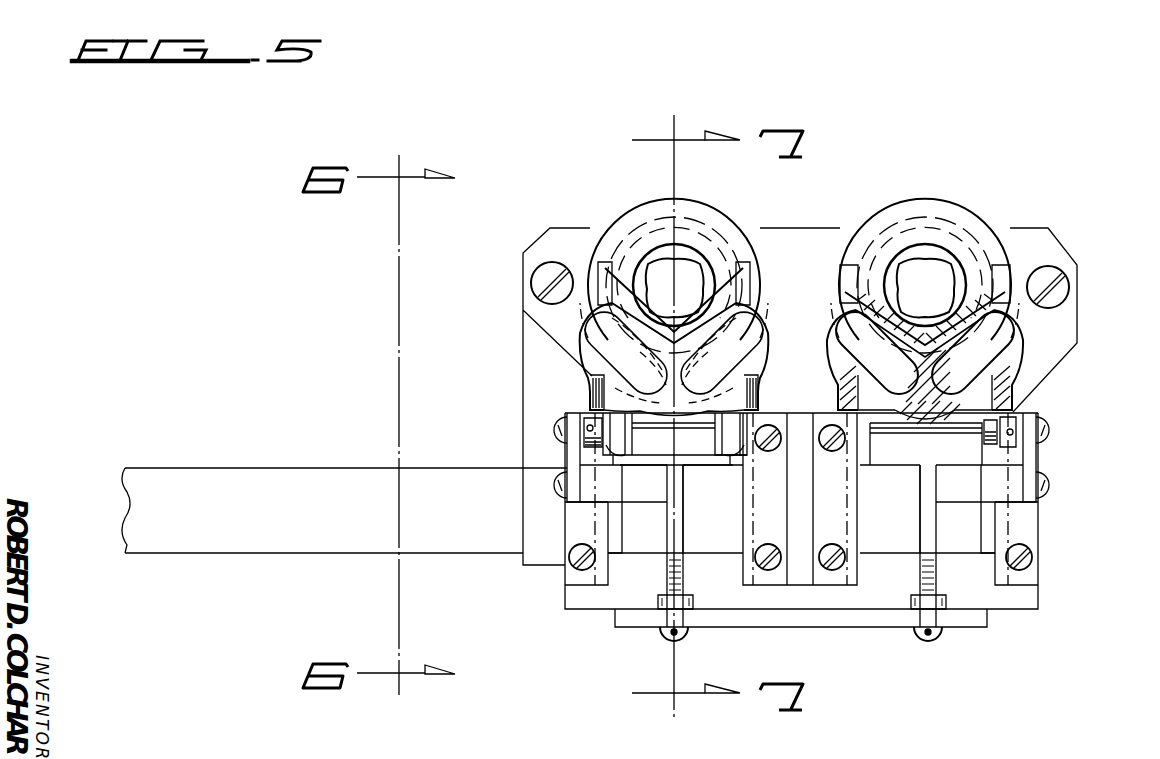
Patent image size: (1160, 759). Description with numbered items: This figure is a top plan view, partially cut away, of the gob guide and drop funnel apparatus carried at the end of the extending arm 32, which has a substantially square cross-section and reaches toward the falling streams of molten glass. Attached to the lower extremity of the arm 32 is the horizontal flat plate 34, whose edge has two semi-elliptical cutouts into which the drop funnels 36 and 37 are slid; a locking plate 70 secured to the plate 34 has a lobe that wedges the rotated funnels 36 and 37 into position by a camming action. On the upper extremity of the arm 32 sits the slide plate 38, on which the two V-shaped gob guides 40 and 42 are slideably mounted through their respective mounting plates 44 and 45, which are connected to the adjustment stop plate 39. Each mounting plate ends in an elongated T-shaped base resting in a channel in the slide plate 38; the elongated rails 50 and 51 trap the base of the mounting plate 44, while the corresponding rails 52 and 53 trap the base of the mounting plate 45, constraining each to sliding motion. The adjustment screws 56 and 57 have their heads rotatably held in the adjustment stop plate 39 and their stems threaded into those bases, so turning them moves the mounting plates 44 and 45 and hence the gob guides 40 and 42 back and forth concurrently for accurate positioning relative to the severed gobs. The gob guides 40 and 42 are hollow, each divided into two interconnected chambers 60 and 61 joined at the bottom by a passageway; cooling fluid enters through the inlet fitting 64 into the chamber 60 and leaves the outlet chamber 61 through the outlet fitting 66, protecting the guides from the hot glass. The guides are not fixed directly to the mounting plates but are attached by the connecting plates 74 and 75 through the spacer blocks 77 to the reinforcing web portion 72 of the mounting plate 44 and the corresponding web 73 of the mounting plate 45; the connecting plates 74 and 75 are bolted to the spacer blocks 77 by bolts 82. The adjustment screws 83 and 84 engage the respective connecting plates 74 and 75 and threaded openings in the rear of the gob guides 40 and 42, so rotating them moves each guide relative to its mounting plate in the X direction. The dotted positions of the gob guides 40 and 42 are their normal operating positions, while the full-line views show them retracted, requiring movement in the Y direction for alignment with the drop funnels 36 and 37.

The extending arm 32 is at (213, 410).
The horizontal flat plate 34 is at (1060, 384).
The drop funnel 36 is at (955, 170).
The drop funnel 37 is at (640, 212).
The slide plate 38 is at (1025, 609).
The adjustment stop plate 39 is at (873, 622).
The V-shaped gob guide 40 is at (1040, 340).
The V-shaped gob guide 42 is at (537, 328).
The mounting plate 44 is at (912, 450).
The mounting plate 45 is at (698, 452).
The elongated rail 50 is at (1030, 580).
The elongated rail 51 is at (836, 572).
The elongated rail 52 is at (567, 580).
The elongated rail 53 is at (771, 577).
The adjustment screw 56 is at (668, 631).
The adjustment screw 57 is at (926, 638).
The chamber 60 is at (1035, 352).
The outlet chamber 61 is at (830, 357).
The inlet fitting 64 is at (812, 394).
The outlet fitting 66 is at (600, 402).
The locking plate 70 is at (1080, 280).
The reinforcing web portion 72 is at (918, 523).
The web 73 is at (684, 525).
The connecting plate 74 is at (1025, 462).
The connecting plate 75 is at (566, 456).
The spacer block 77 is at (662, 490).
The bolt 82 is at (557, 488).
The adjustment screw 83 is at (1040, 426).
The adjustment screw 84 is at (568, 428).